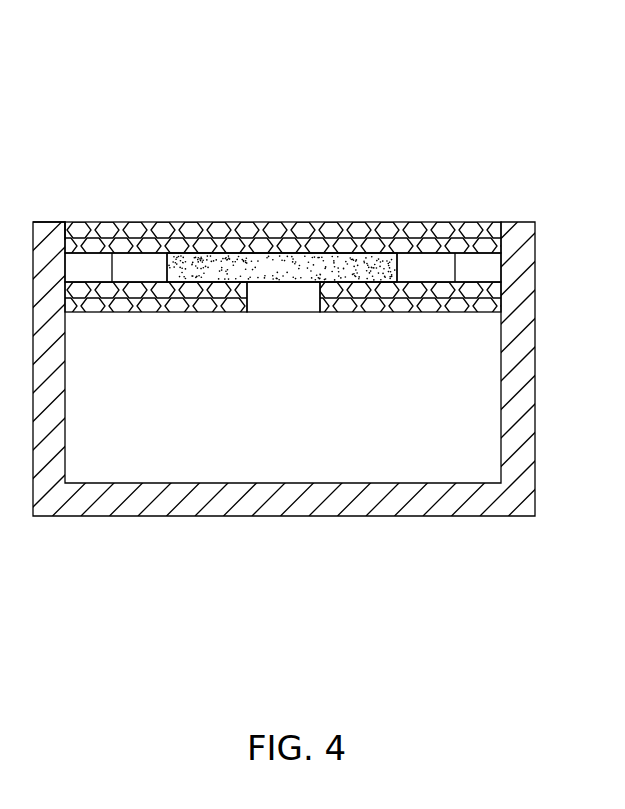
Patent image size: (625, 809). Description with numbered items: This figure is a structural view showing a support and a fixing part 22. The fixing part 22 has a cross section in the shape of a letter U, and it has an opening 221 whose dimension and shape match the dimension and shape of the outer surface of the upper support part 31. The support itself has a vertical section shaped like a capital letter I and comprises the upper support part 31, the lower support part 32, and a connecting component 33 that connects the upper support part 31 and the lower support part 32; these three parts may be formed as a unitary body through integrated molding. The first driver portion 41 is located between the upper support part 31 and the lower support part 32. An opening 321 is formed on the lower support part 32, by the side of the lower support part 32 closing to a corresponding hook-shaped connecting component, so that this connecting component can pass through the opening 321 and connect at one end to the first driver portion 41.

The fixing part 22 is at (290, 500).
The opening 221 is at (63, 223).
The upper support part 31 is at (183, 223).
The lower support part 32 is at (158, 296).
The opening 321 is at (282, 313).
The connecting component 33 is at (423, 270).
The first driver portion 41 is at (283, 270).